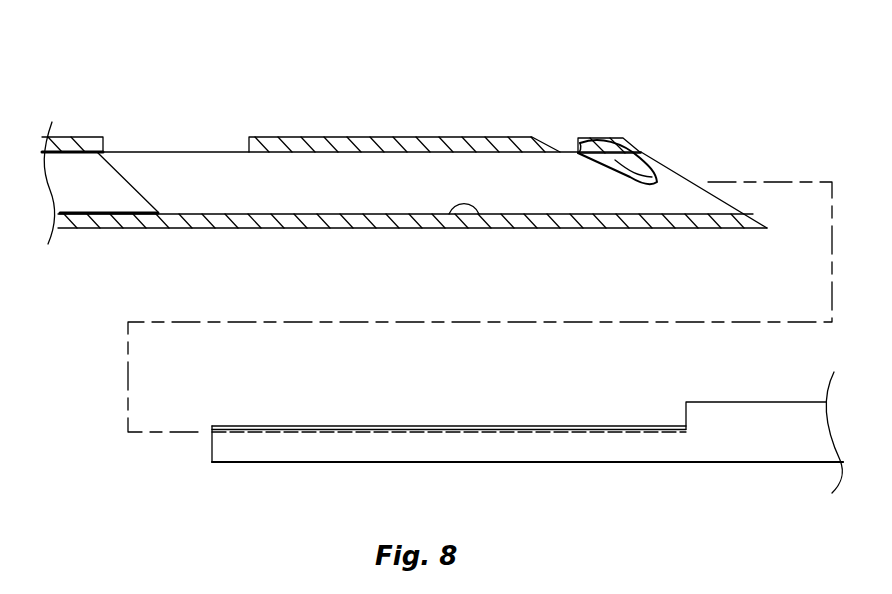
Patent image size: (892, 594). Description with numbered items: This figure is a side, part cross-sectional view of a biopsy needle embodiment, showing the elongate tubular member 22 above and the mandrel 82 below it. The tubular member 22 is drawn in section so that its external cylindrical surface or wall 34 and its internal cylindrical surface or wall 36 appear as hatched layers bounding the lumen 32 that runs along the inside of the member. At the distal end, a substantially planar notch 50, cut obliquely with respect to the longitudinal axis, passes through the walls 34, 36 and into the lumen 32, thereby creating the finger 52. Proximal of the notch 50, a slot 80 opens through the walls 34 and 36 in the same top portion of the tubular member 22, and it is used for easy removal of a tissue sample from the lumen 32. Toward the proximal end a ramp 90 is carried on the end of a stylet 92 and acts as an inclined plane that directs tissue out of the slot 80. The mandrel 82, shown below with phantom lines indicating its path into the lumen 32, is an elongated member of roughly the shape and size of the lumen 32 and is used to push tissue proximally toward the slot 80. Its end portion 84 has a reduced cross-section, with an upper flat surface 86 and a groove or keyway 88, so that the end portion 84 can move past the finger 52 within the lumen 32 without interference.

The elongate tubular member 22 is at (386, 110).
The lumen 32 is at (328, 182).
The external cylindrical surface or wall 34 is at (147, 229).
The internal cylindrical surface or wall 36 is at (470, 214).
The notch 50 is at (658, 172).
The finger 52 is at (606, 136).
The slot 80 is at (220, 145).
The mandrel 82 is at (711, 474).
The end portion 84 is at (318, 453).
The upper flat surface 86 is at (257, 425).
The groove or keyway 88 is at (398, 430).
The ramp 90 is at (127, 170).
The stylet 92 is at (73, 195).